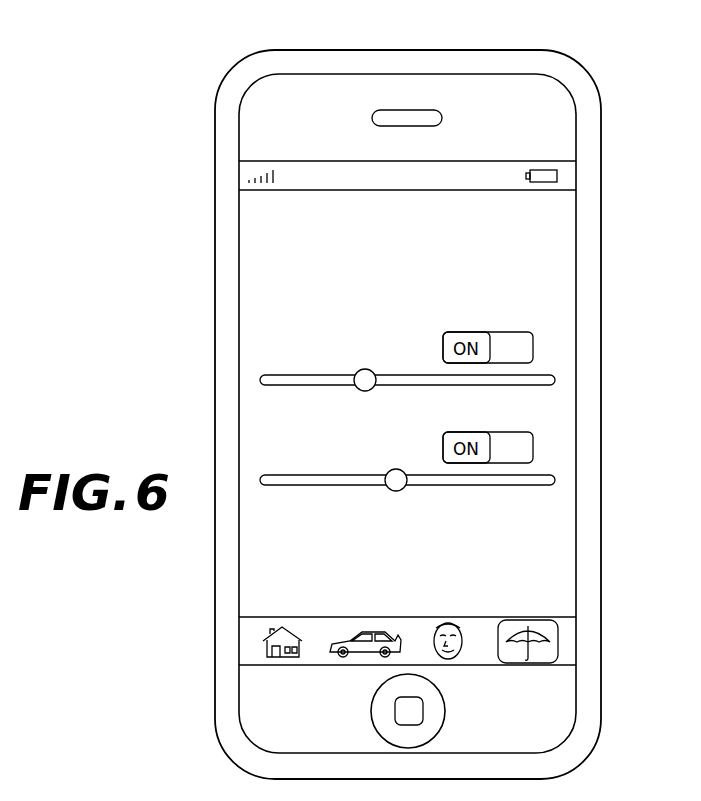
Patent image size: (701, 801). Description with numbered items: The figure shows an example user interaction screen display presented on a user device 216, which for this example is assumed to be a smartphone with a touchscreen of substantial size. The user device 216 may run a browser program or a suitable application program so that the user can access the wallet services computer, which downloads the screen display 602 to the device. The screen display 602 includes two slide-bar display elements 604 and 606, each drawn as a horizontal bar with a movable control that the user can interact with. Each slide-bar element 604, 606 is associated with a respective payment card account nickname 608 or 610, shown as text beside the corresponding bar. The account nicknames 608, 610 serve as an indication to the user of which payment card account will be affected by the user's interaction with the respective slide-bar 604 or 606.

The user device 216 is at (577, 62).
The screen display 602 is at (539, 228).
The slide-bar display element 604 is at (546, 375).
The slide-bar display element 606 is at (546, 475).
The payment card account nickname 608 is at (252, 338).
The payment card account nickname 610 is at (252, 438).